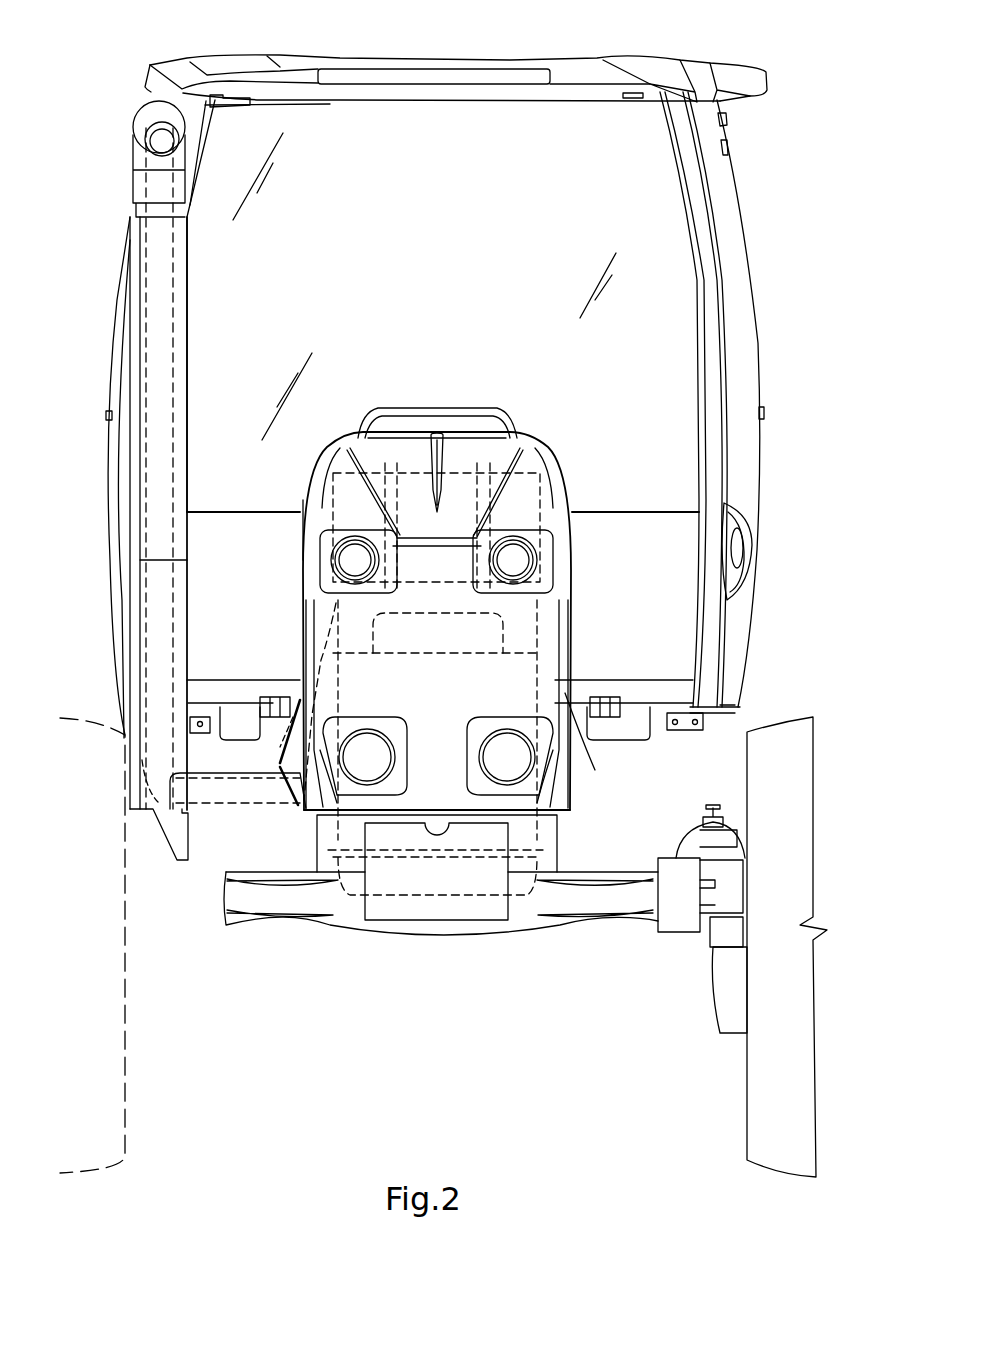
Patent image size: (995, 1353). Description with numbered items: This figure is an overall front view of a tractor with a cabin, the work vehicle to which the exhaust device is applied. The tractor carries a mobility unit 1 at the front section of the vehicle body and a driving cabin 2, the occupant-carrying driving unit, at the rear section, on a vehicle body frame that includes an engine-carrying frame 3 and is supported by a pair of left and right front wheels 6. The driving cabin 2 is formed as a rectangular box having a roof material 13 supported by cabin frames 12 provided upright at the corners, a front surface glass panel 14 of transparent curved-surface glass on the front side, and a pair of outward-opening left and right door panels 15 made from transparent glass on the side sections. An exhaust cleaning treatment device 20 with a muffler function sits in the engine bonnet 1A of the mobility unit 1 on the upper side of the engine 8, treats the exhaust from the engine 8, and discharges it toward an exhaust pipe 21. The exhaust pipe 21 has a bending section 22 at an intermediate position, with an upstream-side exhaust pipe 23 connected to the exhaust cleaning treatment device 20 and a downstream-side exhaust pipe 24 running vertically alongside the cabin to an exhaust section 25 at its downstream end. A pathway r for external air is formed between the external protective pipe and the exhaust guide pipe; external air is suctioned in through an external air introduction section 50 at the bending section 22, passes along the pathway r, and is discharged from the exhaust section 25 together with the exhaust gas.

The mobility unit 1 is at (445, 383).
The engine bonnet 1A is at (556, 485).
The driving cabin 2 is at (760, 140).
The engine-carrying frame 3 is at (556, 838).
The front wheels 6 is at (747, 1090).
The engine 8 is at (556, 648).
The cabin frames 12 is at (197, 124).
The roof material 13 is at (630, 62).
The front surface glass panel 14 is at (446, 235).
The door panels 15 is at (735, 257).
The exhaust cleaning treatment device 20 is at (323, 503).
The exhaust pipe 21 is at (190, 299).
The bending section 22 is at (152, 803).
The upstream-side exhaust pipe 23 is at (237, 816).
The downstream-side exhaust pipe 24 is at (189, 411).
The exhaust section 25 is at (141, 107).
The external air introduction section 50 is at (152, 846).
The pathway r is at (182, 591).